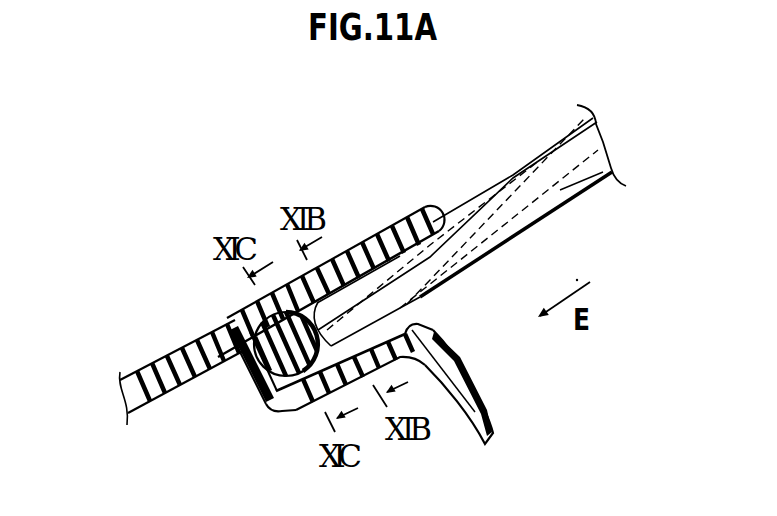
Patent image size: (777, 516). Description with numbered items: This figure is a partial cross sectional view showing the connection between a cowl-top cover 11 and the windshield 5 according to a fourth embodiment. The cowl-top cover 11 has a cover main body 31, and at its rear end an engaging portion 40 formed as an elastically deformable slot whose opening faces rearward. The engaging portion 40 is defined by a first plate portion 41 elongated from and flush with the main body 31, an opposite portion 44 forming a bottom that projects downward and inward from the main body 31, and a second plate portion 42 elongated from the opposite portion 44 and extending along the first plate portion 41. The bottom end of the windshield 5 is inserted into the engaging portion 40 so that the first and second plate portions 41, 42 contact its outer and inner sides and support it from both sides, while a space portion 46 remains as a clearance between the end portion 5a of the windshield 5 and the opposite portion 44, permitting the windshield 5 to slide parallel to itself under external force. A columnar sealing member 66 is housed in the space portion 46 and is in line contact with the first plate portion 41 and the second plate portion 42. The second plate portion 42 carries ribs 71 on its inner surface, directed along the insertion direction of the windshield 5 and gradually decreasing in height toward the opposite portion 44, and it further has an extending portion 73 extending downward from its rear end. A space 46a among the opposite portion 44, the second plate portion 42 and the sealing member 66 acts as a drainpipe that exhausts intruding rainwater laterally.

The windshield 5 is at (540, 162).
The end portion 5a is at (263, 318).
The cowl-top cover 11 is at (178, 352).
The cover main body 31 is at (140, 380).
The engaging portion 40 is at (397, 222).
The first plate portion 41 is at (358, 244).
The second plate portion 42 is at (400, 356).
The opposite portion 44 is at (250, 383).
The space portion 46 is at (302, 312).
The space 46a is at (268, 403).
The sealing member 66 is at (293, 408).
The ribs 71 is at (403, 318).
The extending portion 73 is at (489, 416).